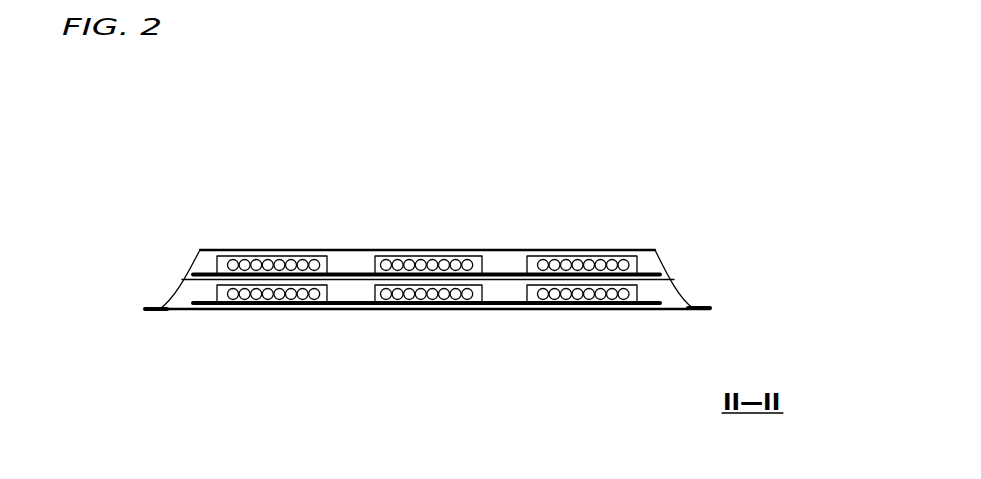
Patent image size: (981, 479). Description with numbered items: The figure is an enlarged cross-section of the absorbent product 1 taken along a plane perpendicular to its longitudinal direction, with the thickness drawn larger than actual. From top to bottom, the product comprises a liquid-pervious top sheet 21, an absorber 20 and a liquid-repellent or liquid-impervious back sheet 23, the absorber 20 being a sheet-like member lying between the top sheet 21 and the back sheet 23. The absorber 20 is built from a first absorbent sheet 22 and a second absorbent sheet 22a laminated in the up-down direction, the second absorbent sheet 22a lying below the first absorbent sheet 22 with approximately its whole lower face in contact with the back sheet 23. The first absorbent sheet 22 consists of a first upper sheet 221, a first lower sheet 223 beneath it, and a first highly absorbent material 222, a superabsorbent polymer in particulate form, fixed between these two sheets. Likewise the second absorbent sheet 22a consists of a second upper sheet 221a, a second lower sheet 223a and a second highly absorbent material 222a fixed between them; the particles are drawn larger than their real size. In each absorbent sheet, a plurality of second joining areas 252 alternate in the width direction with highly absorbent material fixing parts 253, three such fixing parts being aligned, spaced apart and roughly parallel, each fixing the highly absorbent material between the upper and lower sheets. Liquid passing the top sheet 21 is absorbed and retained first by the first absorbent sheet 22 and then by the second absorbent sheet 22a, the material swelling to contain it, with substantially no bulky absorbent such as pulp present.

The absorbent product 1 is at (133, 98).
The absorber 20 is at (240, 125).
The top sheet 21 is at (674, 262).
The first absorbent sheet 22 is at (289, 180).
The second absorbent sheet 22a is at (469, 404).
The back sheet 23 is at (673, 312).
The first upper sheet 221 is at (432, 254).
The second upper sheet 221a is at (432, 308).
The first highly absorbent material 222 is at (307, 252).
The second highly absorbent material 222a is at (297, 312).
The first lower sheet 223 is at (378, 252).
The second lower sheet 223a is at (530, 312).
The second joining area 252 is at (200, 251).
The highly absorbent material fixing part 253 is at (263, 251).